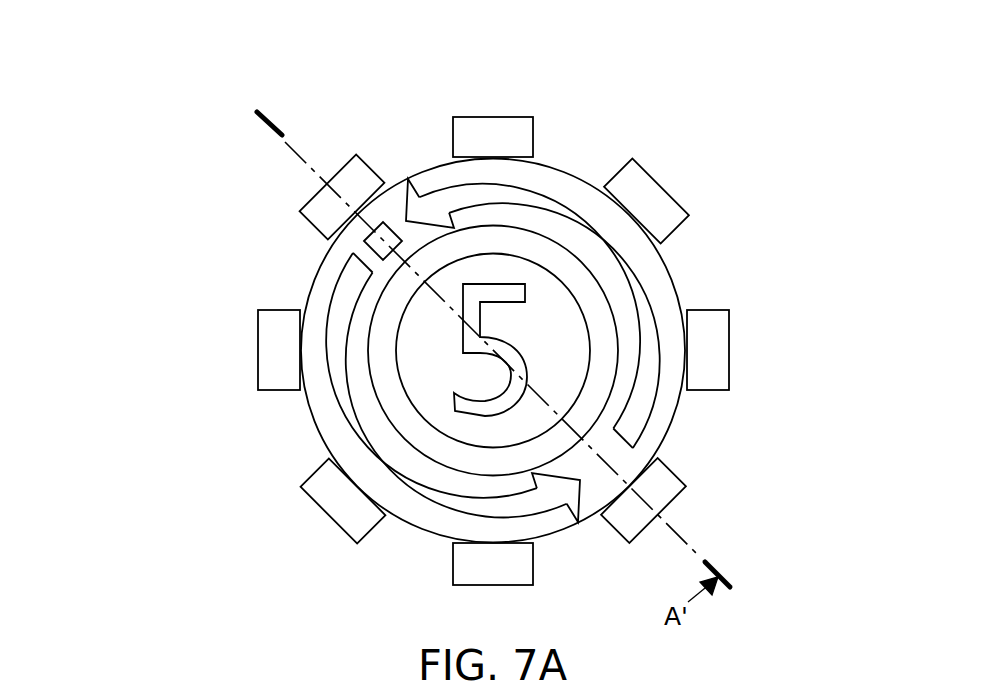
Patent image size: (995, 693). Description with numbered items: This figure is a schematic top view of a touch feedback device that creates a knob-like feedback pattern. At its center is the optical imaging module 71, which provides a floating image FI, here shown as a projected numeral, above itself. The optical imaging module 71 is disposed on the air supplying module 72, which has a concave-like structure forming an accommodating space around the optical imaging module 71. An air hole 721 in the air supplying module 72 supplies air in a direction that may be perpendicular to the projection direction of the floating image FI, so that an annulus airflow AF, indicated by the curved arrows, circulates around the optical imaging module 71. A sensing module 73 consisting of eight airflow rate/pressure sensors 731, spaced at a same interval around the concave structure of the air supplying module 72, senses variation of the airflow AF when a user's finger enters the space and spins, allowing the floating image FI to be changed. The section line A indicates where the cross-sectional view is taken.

The sensing module 73 is at (58, 48).
The airflow rate/pressure sensors 731 is at (453, 583).
The air supplying module 72 is at (563, 167).
The air hole 721 is at (393, 219).
The optical imaging module 71 is at (378, 292).
The floating image FI is at (575, 293).
The airflow AF is at (561, 512).
The line A-A' A is at (270, 128).